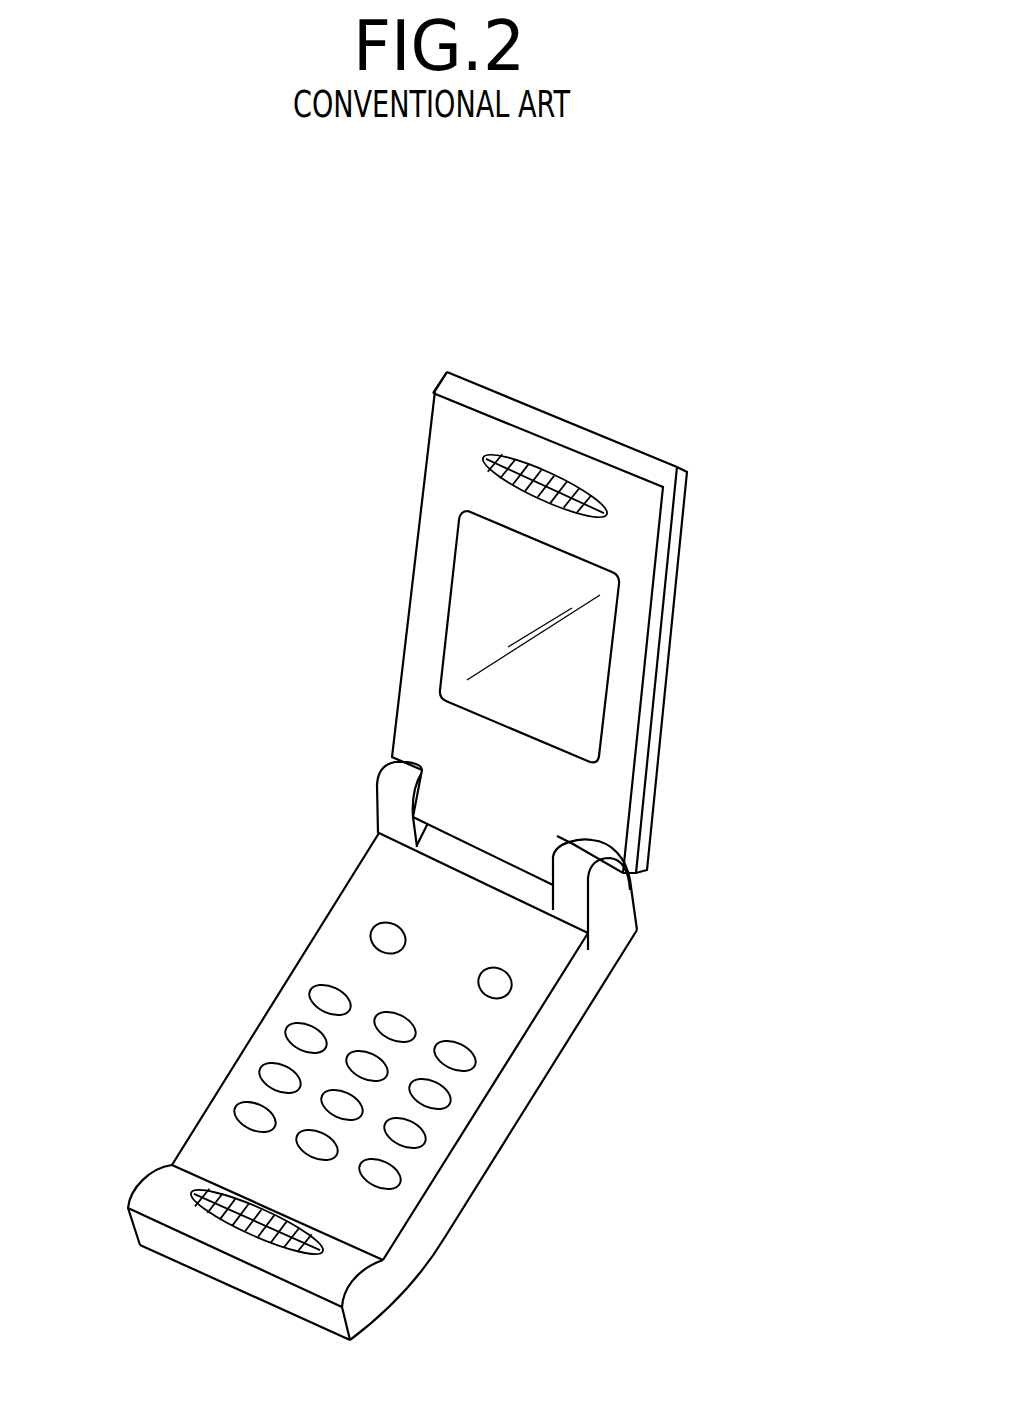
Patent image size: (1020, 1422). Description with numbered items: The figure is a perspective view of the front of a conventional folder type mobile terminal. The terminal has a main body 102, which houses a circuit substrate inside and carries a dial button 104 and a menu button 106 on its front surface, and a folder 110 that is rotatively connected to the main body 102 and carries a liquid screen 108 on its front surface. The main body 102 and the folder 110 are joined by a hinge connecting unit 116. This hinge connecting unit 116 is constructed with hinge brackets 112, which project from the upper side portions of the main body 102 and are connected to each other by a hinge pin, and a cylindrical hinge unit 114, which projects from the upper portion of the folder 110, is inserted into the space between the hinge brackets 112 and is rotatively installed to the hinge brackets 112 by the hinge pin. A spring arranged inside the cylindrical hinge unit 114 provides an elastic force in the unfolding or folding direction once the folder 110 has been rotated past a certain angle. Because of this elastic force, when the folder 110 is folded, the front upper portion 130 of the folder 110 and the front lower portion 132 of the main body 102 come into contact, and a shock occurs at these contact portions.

The main body 102 is at (388, 1207).
The dial button 104 is at (305, 1037).
The menu button 106 is at (497, 980).
The liquid screen 108 is at (478, 585).
The folder 110 is at (632, 652).
The hinge bracket 112 is at (580, 864).
The cylindrical hinge unit 114 is at (527, 852).
The hinge connecting unit 116 is at (607, 856).
The front upper portion 130 is at (540, 467).
The front lower portion 132 is at (232, 1225).